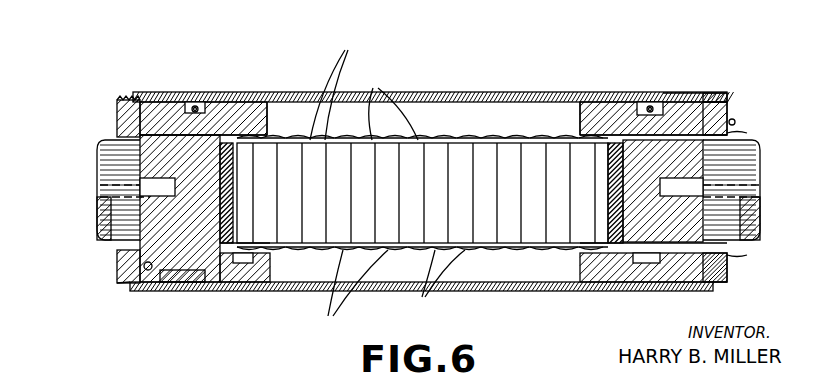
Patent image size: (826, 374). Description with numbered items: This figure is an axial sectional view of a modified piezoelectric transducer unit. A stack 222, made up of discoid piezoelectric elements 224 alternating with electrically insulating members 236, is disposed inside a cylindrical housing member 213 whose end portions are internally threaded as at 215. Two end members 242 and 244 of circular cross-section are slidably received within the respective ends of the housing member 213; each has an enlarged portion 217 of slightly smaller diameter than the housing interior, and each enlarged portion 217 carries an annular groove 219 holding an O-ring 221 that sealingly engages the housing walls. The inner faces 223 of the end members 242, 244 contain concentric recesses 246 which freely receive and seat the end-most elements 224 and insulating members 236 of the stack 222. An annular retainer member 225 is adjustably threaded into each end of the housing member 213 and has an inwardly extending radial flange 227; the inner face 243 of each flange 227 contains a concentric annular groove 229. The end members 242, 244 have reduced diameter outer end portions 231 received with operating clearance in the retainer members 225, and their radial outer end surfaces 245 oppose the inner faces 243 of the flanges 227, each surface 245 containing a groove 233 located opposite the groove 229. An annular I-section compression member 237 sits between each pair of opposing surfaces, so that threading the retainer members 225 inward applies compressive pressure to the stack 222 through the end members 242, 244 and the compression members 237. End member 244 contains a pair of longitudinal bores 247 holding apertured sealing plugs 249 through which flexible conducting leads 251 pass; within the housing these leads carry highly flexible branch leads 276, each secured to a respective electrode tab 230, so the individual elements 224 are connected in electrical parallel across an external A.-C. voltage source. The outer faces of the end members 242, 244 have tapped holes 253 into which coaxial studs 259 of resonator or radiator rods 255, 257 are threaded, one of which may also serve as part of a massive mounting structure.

The cylindrical housing member 213 is at (412, 86).
The internal threads 215 is at (176, 100).
The enlarged portion 217 is at (252, 290).
The annular groove 219 is at (218, 95).
The O-ring 221 is at (250, 100).
The stack 222 is at (535, 134).
The inner face 223 is at (272, 112).
The discoid piezoelectric elements 224 is at (510, 150).
The annular retainer member 225 is at (133, 273).
The radial flange 227 is at (118, 270).
The annular groove 229 is at (152, 276).
The electrode tab 230 is at (387, 173).
The reduced diameter outer end portion 231 is at (205, 283).
The groove 233 is at (123, 280).
The electrically insulating members 236 is at (228, 104).
The I-section compression member 237 is at (735, 285).
The end member 242 is at (148, 100).
The inner face 243 is at (175, 278).
The end member 244 is at (690, 100).
The outer end surface 245 is at (120, 135).
The concentric recess 246 is at (265, 112).
The longitudinal bores 247 is at (655, 158).
The apertured sealing plugs 249 is at (715, 100).
The flexible conducting leads 251 is at (748, 136).
The tapped holes 253 is at (100, 192).
The rod 255 is at (100, 178).
The rod 257 is at (735, 187).
The coaxial studs 259 is at (150, 187).
The branch leads 276 is at (364, 203).